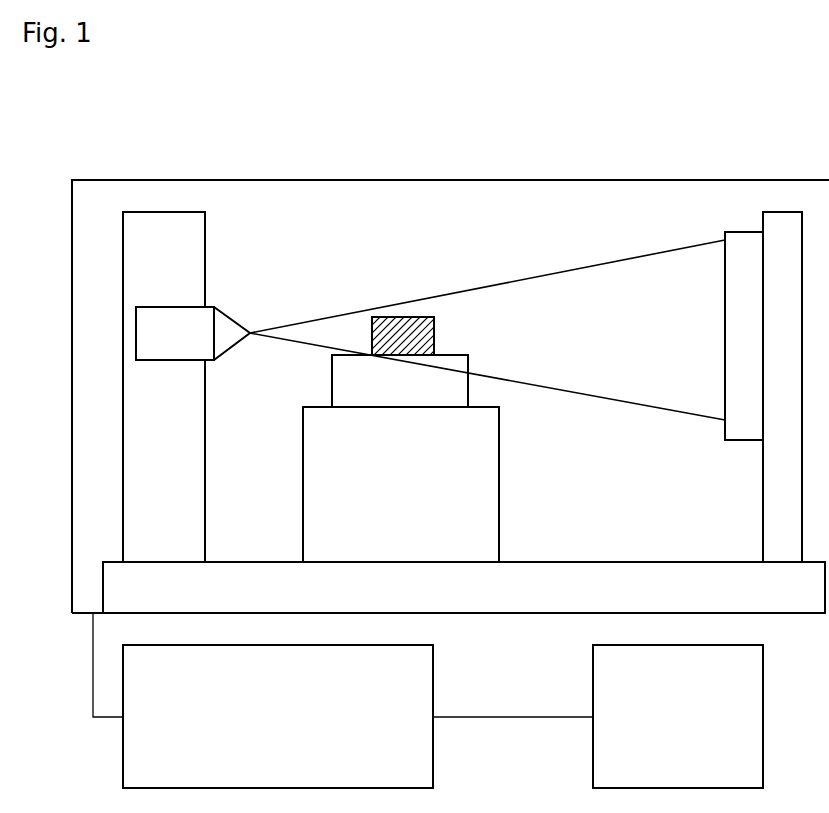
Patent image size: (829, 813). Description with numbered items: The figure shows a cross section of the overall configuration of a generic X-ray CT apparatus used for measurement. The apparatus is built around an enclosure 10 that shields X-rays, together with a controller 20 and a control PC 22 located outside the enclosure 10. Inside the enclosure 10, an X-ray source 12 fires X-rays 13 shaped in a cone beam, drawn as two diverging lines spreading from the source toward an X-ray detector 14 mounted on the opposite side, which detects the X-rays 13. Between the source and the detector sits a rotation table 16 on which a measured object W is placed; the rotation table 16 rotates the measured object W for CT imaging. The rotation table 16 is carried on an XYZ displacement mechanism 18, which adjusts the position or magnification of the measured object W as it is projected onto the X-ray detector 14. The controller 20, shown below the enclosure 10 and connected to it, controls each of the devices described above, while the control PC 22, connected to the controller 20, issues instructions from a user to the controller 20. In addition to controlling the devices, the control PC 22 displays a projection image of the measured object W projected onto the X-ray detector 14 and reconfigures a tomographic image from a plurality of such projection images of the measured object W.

The enclosure 10 is at (450, 380).
The X-ray source 12 is at (153, 360).
The X-rays 13 is at (614, 262).
The X-ray detector 14 is at (742, 293).
The measured object W is at (418, 333).
The rotation table 16 is at (468, 393).
The XYZ displacement mechanism 18 is at (499, 497).
The controller 20 is at (355, 645).
The control PC 22 is at (705, 645).